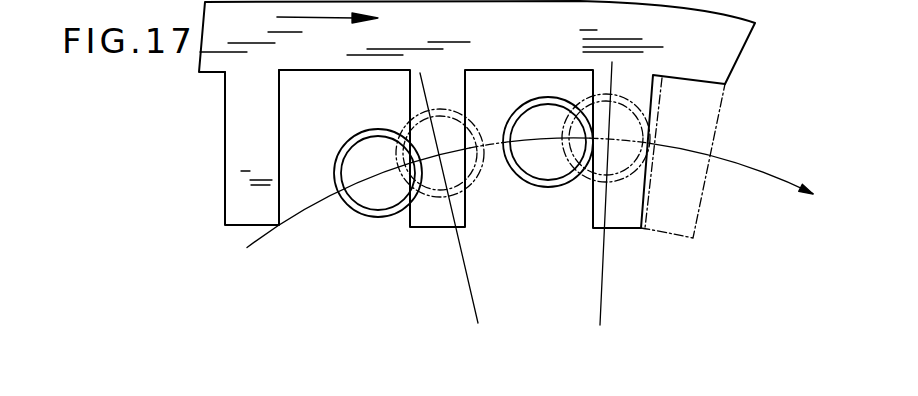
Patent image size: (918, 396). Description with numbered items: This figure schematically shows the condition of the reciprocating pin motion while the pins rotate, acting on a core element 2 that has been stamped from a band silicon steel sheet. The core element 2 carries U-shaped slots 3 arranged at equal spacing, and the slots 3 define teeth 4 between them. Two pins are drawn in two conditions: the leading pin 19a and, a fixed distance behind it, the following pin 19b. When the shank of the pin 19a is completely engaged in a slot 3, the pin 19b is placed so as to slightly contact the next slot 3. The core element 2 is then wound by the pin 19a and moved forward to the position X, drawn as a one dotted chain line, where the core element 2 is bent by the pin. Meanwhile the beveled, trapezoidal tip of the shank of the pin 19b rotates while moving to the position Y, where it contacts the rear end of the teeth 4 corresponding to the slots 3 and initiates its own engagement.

The core element 2 is at (710, 53).
The slot 3 is at (280, 182).
The tooth 4 is at (234, 203).
The pin 19a is at (615, 160).
The pin 19b is at (438, 180).
The position X is at (599, 210).
The position Y is at (461, 214).